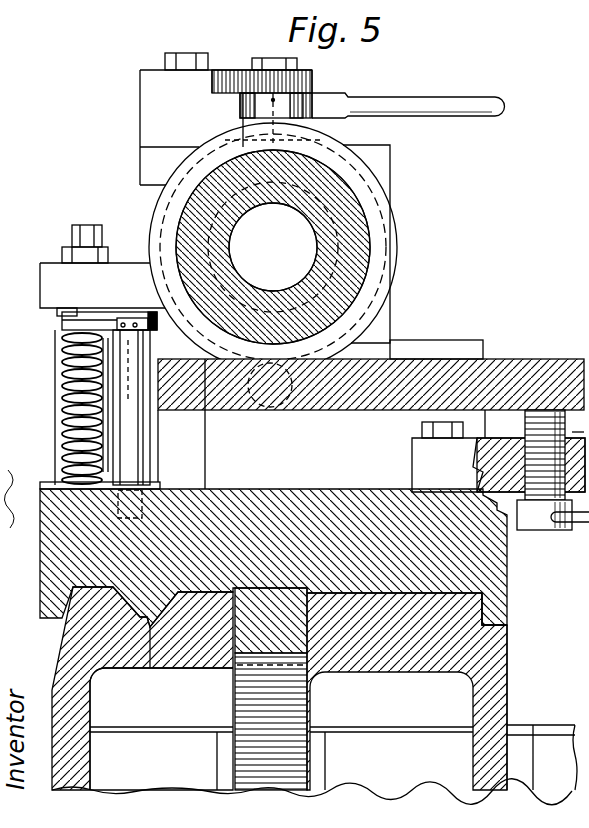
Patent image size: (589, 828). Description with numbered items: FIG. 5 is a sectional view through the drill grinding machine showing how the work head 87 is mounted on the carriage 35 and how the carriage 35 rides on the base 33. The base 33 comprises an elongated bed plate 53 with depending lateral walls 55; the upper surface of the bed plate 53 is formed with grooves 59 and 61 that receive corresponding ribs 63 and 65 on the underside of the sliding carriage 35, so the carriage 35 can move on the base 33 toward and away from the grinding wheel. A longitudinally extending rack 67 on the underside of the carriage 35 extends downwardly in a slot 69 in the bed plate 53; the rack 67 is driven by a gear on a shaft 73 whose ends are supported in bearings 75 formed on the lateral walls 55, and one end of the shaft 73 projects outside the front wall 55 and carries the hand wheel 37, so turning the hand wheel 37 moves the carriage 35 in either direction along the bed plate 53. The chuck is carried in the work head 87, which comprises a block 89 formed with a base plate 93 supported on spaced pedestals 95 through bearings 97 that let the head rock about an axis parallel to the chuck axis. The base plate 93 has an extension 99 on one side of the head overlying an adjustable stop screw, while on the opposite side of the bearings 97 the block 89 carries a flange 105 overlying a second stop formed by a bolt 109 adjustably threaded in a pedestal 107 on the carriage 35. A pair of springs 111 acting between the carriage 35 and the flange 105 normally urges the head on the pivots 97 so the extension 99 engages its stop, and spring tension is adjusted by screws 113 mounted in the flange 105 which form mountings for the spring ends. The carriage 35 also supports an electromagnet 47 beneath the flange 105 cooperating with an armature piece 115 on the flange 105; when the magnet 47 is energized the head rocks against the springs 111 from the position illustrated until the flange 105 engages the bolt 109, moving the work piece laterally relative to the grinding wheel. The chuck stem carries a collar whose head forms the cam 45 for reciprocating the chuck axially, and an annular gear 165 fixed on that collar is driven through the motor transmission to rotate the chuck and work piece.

The base 33 is at (488, 647).
The sliding frame 35 is at (330, 491).
The hand wheel 37 is at (558, 726).
The cam 45 is at (404, 282).
The electro-magnet 47 is at (55, 375).
The bed plate 53 is at (368, 664).
The lateral walls 55 is at (80, 707).
The groove 59 is at (472, 625).
The groove 61 is at (150, 627).
The rib 63 is at (500, 612).
The rib 65 is at (140, 617).
The rack 67 is at (237, 637).
The slot 69 is at (310, 660).
The shaft 73 is at (140, 745).
The bearings 75 is at (193, 734).
The work head 87 is at (400, 310).
The block 89 is at (392, 156).
The base plate 93 is at (336, 407).
The pedestals 95 is at (470, 346).
The bearings 97 is at (276, 398).
The extension 99 is at (519, 366).
The flange 105 is at (50, 275).
The pedestal 107 is at (140, 450).
The bolt 109 is at (150, 325).
The springs 111 is at (62, 405).
The adjustable screws 113 is at (78, 232).
The armature piece 115 is at (57, 318).
The annular gear 165 is at (402, 213).